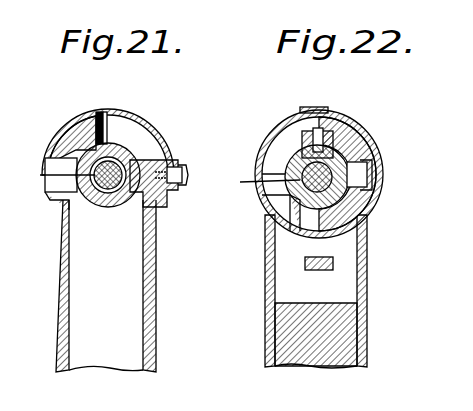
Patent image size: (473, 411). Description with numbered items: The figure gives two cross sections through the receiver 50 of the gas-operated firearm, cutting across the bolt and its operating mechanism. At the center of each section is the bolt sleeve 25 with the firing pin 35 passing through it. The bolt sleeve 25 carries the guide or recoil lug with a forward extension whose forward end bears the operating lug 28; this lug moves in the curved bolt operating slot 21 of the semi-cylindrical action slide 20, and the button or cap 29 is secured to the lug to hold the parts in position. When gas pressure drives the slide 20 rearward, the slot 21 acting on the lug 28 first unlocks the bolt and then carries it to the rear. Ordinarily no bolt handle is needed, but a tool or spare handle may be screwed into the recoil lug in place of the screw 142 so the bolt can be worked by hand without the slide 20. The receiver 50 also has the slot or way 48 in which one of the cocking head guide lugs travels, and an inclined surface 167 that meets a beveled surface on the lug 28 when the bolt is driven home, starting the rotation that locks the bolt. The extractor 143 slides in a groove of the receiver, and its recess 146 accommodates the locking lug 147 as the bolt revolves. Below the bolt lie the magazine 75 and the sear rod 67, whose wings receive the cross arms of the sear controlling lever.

In FIG. 21, the action slide 20 is at (143, 122).
In FIG. 22, the action slide 20 is at (362, 146).
In FIG. 22, the bolt operating slot 21 is at (326, 109).
In FIG. 21, the bolt sleeve 25 is at (108, 208).
In FIG. 22, the bolt sleeve 25 is at (292, 158).
In FIG. 21, the operating lug 28 is at (152, 165).
In FIG. 21, the button or cap 29 is at (180, 165).
In FIG. 21, the firing pin 35 is at (53, 176).
In FIG. 22, the firing pin 35 is at (281, 177).
In FIG. 21, the slot or way 48 is at (58, 163).
In FIG. 21, the receiver 50 is at (82, 133).
In FIG. 22, the receiver 50 is at (372, 150).
In FIG. 22, the sear rod 67 is at (320, 270).
In FIG. 21, the magazine 75 is at (69, 294).
In FIG. 21, the screw 142 is at (188, 176).
In FIG. 22, the extractor 143 is at (368, 183).
In FIG. 22, the recess 146 is at (378, 164).
In FIG. 22, the locking lug 147 is at (367, 222).
In FIG. 21, the inclined surface 167 is at (105, 112).